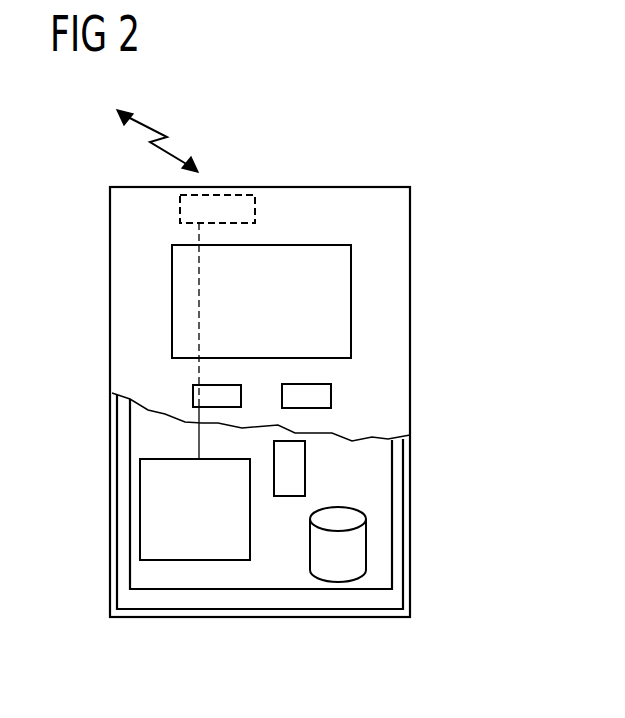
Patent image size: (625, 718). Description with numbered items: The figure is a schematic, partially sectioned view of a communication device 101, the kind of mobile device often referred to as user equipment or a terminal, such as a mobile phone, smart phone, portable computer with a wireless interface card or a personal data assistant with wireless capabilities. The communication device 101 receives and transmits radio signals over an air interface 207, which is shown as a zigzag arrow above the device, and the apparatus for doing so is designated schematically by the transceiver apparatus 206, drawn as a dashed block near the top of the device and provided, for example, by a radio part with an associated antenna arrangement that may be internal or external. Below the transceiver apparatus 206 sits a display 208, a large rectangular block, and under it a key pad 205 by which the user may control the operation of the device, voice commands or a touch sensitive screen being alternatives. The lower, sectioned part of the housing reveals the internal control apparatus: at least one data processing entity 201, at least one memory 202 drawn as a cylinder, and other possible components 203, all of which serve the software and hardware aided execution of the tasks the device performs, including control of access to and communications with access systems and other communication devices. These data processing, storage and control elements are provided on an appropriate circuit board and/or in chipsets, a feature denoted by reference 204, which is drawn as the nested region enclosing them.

The communication device 101 is at (258, 187).
The data processing entity 201 is at (138, 507).
The memory 202 is at (366, 548).
The other possible components 203 is at (305, 458).
The circuit board and/or chipsets 204 is at (138, 576).
The key pad 205 is at (193, 397).
The transceiver apparatus 206 is at (256, 208).
The air interface 207 is at (154, 132).
The display 208 is at (172, 301).